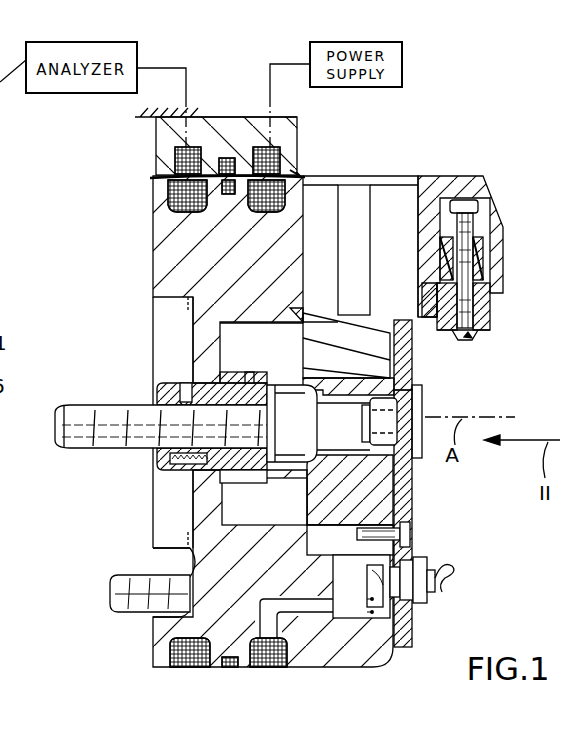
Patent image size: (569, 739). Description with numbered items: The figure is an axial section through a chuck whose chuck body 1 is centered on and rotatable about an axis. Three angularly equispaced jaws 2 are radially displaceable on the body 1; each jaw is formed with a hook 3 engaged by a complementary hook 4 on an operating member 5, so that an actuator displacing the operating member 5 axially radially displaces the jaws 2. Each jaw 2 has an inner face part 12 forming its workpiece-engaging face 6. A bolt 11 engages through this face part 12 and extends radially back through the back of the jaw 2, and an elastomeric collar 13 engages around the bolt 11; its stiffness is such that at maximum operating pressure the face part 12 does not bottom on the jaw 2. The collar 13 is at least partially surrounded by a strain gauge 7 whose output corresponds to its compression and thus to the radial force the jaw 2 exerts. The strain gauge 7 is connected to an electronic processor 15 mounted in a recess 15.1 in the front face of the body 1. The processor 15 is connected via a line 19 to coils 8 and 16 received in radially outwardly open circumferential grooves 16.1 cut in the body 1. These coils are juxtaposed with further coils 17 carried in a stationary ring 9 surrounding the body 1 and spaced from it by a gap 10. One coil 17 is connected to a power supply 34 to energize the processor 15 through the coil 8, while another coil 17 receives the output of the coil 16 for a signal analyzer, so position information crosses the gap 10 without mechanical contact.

The chuck body 1 is at (335, 655).
The jaw 2 is at (398, 195).
The hook 3 is at (412, 345).
The complementary hook 4 is at (416, 378).
The operating member 5 is at (296, 447).
The workpiece-engaging face 6 is at (470, 334).
The strain gauge 7 is at (482, 282).
The coil 8 is at (270, 668).
The stationary ring 9 is at (278, 128).
The gap 10 is at (305, 172).
The bolt 11 is at (470, 243).
The inner face part 12 is at (492, 313).
The elastomeric collar 13 is at (484, 262).
The electronic processor 15 is at (356, 585).
The recess 15.1 is at (388, 607).
The coil 16 is at (170, 235).
The circumferential groove 16.1 is at (300, 177).
The further coil 17 is at (262, 138).
The line 19 is at (313, 616).
The power supply 34 is at (402, 62).